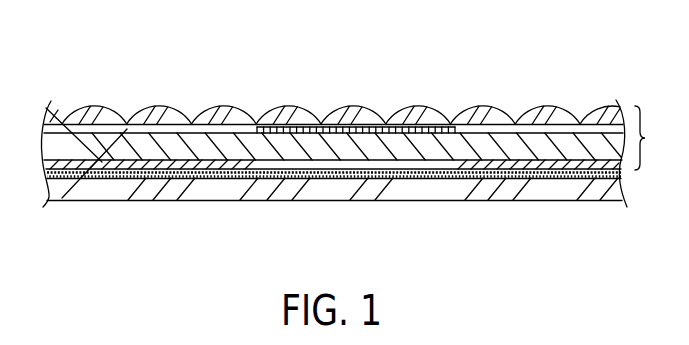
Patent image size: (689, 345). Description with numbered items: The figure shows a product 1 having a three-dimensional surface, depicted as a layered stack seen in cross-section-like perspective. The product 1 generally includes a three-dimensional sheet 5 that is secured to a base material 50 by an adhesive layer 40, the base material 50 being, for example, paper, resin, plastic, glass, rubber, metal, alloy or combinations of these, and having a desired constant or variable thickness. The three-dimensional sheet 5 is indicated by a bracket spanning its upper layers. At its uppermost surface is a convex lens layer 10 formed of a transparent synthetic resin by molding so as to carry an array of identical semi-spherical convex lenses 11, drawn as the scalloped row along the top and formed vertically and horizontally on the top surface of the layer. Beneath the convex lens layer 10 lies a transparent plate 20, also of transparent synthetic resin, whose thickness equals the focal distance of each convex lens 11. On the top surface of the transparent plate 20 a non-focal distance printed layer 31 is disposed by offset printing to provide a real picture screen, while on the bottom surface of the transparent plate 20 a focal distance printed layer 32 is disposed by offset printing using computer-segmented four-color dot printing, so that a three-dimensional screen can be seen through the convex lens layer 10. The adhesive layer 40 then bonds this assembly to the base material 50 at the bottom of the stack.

The product 1 is at (614, 72).
The three-dimensional sheet 5 is at (335, 138).
The convex lens layer 10 is at (429, 95).
The convex lens 11 is at (160, 117).
The transparent plate 20 is at (63, 145).
The non-focal distance printed layer 31 is at (356, 131).
The focal distance printed layer 32 is at (177, 167).
The adhesive layer 40 is at (603, 173).
The base material 50 is at (603, 188).